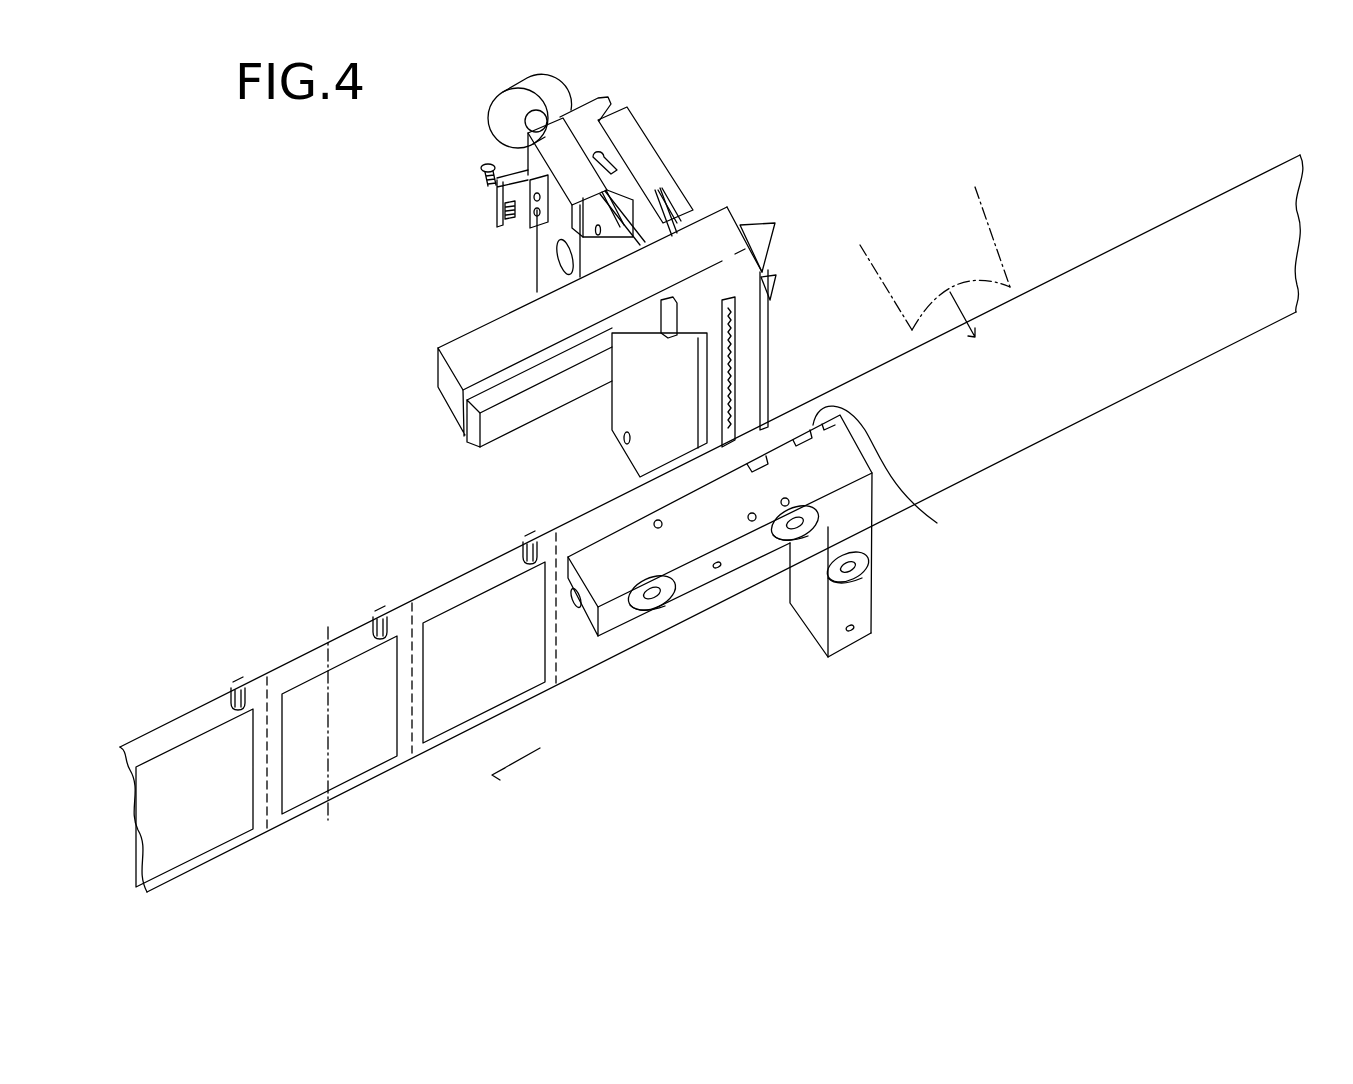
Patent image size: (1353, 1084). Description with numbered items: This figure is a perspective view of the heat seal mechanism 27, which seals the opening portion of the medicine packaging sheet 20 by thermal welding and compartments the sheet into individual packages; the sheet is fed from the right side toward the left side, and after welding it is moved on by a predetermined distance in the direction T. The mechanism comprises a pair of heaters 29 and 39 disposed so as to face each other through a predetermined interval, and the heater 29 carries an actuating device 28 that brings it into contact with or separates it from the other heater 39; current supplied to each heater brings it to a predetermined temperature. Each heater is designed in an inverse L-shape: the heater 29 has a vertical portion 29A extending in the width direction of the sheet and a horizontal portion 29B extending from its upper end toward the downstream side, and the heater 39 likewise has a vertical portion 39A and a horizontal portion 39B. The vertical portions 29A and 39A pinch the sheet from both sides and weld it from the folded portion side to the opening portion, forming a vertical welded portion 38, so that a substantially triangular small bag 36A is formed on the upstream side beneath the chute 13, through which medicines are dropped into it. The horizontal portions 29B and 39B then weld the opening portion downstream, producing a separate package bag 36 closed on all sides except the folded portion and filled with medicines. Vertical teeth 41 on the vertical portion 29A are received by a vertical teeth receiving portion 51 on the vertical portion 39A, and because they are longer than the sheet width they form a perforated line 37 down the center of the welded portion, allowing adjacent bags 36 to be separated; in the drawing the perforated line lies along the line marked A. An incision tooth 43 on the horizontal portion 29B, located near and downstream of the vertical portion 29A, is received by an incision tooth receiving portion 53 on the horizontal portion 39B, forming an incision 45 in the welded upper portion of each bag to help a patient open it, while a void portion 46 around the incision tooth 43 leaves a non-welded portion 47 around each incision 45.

The chute 13 is at (988, 210).
The medicine packaging sheet 20 is at (343, 621).
The heat seal mechanism 27 is at (738, 172).
The actuating device 28 is at (638, 157).
The heater 29 is at (473, 364).
The vertical portion 29A is at (745, 345).
The horizontal portion 29B is at (500, 343).
The separate package bag 36 is at (223, 833).
The small bag 36A is at (943, 417).
The perforated line 37 is at (267, 675).
The vertical welded portion 38 is at (272, 817).
The heater 39 is at (611, 579).
The vertical portion 39A is at (852, 593).
The horizontal portion 39B is at (683, 533).
The vertical teeth 41 is at (758, 335).
The incision tooth 43 is at (678, 304).
The incision 45 is at (237, 708).
The void portion 46 is at (652, 317).
The non-welded portion 47 is at (248, 680).
The vertical teeth receiving portion 51 is at (890, 483).
The incision tooth receiving portion 53 is at (743, 460).
The axis A is at (328, 760).
The feeding direction T is at (516, 751).